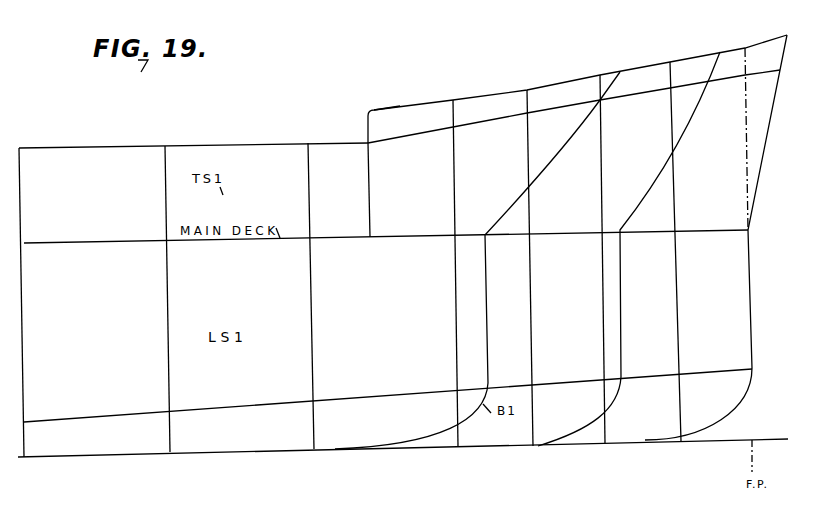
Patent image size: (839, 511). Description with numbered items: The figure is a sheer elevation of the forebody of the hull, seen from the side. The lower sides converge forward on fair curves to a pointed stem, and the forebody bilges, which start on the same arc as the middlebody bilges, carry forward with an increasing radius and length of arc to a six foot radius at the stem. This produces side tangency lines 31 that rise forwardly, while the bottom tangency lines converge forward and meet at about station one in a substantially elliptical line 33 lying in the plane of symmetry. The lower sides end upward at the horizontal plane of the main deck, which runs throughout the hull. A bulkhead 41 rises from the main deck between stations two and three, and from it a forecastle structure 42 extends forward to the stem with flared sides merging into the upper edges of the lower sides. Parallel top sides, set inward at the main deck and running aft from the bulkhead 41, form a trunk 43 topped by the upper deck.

The trunk 43 is at (107, 148).
The forecastle structure 42 is at (470, 138).
The bulkhead 41 is at (379, 194).
The side tangency lines 31 is at (88, 415).
The substantially elliptical line 33 is at (726, 421).